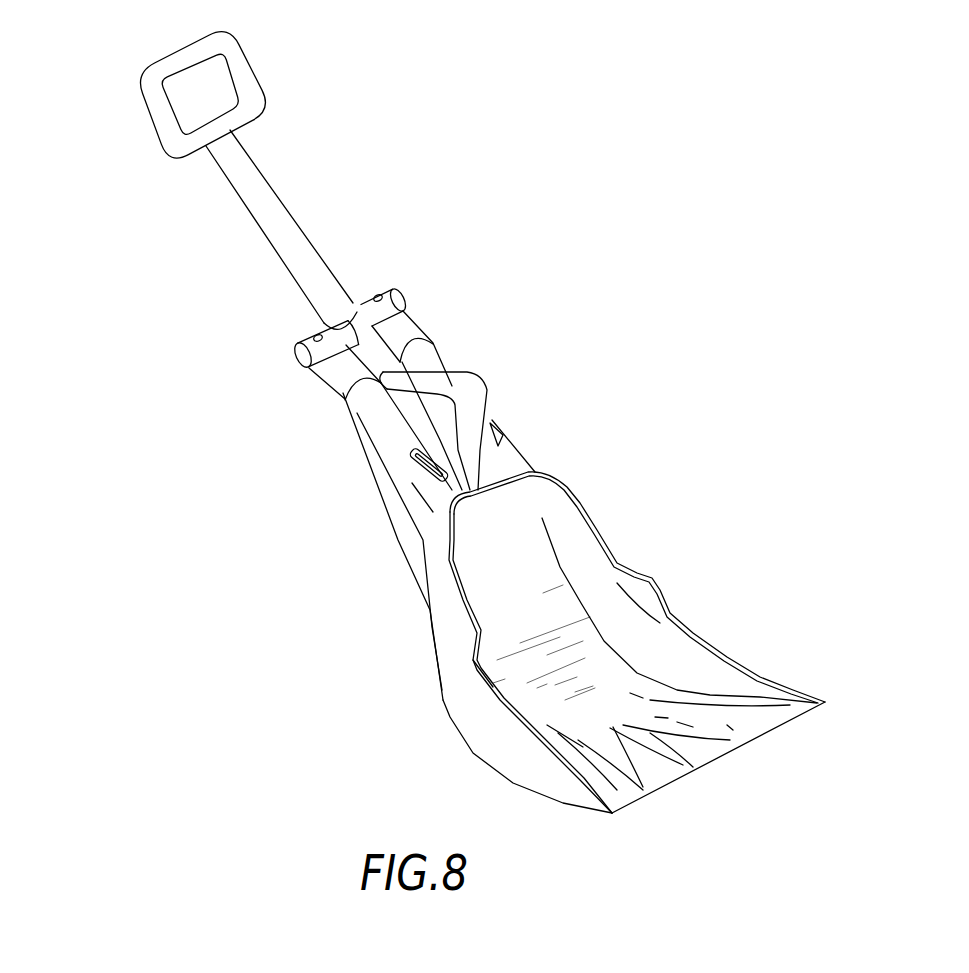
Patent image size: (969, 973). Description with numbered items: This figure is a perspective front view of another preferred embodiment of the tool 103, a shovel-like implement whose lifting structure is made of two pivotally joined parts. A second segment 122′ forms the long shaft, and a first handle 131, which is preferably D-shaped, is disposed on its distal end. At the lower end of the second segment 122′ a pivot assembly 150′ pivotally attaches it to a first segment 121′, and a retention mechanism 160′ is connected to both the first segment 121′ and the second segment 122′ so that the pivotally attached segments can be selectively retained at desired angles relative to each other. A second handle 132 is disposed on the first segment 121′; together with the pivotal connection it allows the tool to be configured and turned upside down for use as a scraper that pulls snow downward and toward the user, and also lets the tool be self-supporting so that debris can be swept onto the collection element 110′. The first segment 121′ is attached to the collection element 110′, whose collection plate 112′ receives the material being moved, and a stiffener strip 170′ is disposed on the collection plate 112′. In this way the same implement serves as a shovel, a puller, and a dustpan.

The tool 103 is at (186, 87).
The first handle 131 is at (240, 73).
The second segment 122′ is at (228, 268).
The pivot assembly 150′ is at (290, 358).
The retention mechanism 160′ is at (321, 334).
The first segment 121′ is at (356, 483).
The second handle 132 is at (485, 401).
The collection element 110′ is at (722, 628).
The collection plate 112′ is at (742, 710).
The stiffener strip 170′ is at (712, 762).